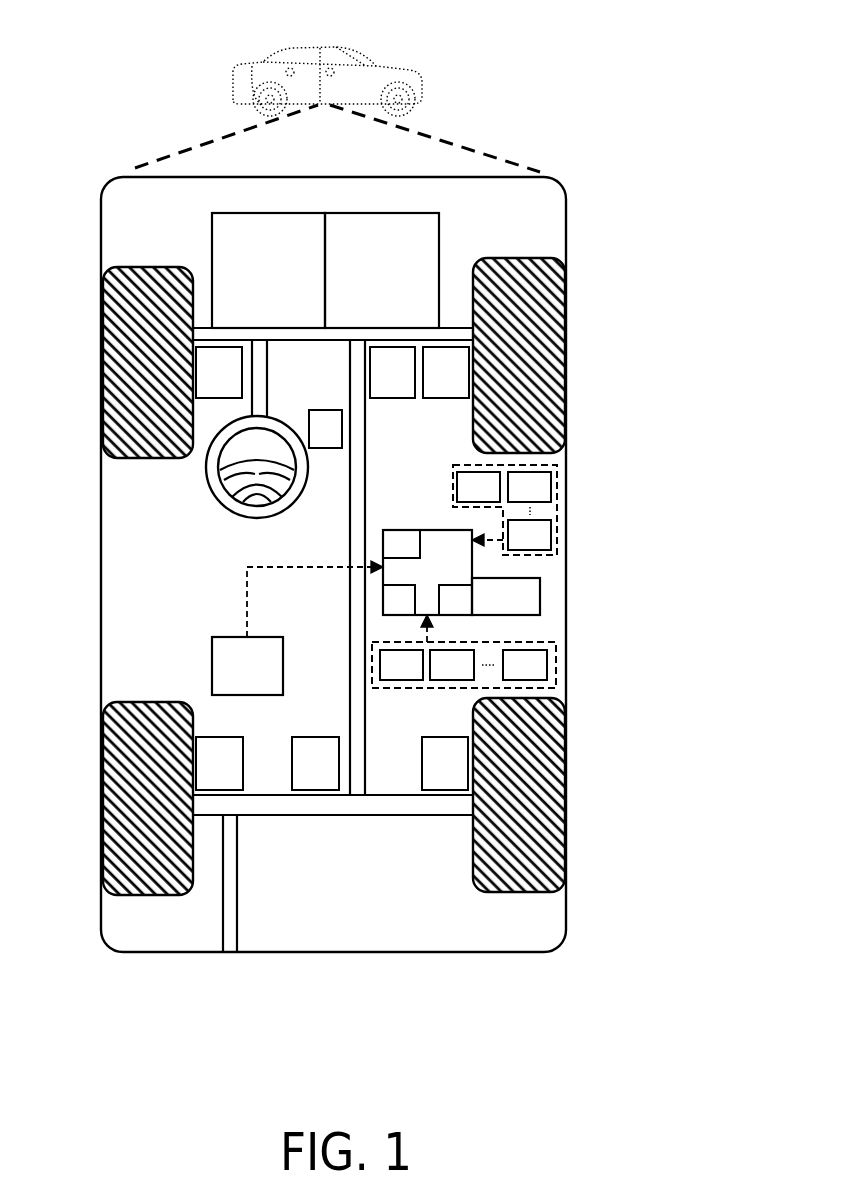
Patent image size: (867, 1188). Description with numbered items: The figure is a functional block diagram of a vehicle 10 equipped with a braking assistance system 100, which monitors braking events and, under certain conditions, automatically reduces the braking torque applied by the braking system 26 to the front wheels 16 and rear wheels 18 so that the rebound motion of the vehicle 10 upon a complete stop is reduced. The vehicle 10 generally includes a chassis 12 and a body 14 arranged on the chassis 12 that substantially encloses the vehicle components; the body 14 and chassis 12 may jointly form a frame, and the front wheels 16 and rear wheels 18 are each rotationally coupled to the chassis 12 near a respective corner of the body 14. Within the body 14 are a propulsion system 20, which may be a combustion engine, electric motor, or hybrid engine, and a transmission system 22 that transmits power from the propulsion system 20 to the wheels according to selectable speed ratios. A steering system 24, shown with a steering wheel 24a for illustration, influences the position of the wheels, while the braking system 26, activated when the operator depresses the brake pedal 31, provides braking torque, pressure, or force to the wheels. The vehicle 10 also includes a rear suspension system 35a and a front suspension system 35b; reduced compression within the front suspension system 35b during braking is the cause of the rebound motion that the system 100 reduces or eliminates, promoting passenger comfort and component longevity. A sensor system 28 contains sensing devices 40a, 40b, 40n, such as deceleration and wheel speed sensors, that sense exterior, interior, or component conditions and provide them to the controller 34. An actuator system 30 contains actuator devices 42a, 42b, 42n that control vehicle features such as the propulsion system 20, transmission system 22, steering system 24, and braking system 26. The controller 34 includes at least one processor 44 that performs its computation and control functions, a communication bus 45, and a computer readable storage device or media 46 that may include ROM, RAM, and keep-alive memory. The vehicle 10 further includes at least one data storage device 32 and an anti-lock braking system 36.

The vehicle 10 is at (413, 72).
The braking assistance system 100 is at (611, 260).
The chassis 12 is at (349, 730).
The body 14 is at (101, 660).
The front wheels 16 is at (148, 267).
The rear wheels 18 is at (163, 895).
The propulsion system 20 is at (256, 282).
The transmission system 22 is at (370, 282).
The steering system 24 is at (266, 417).
The steering wheel 24a is at (221, 491).
The braking system 26 is at (207, 383).
The sensor system 28 is at (557, 513).
The actuator system 30 is at (414, 690).
The brake pedal 31 is at (314, 440).
The data storage device 32 is at (494, 607).
The controller 34 is at (416, 584).
The rear suspension system 35a is at (331, 774).
The front suspension system 35b is at (408, 383).
The anti-lock braking system 36 is at (235, 676).
The sensing device 40a is at (463, 497).
The sensing device 40b is at (514, 497).
The sensing device 40n is at (514, 545).
The actuator device 42a is at (386, 675).
The actuator device 42b is at (437, 675).
The actuator device 42n is at (510, 675).
The processor 44 is at (388, 611).
The communication bus 45 is at (390, 555).
The computer readable storage device or media 46 is at (444, 611).